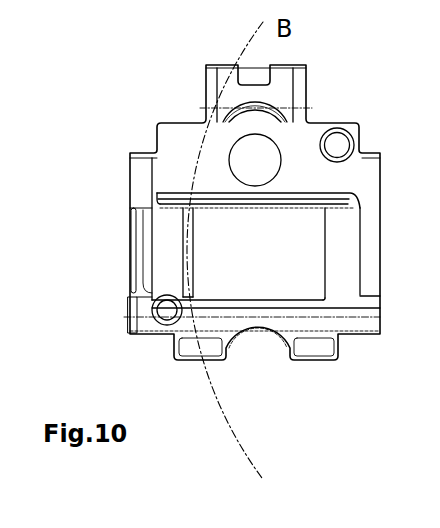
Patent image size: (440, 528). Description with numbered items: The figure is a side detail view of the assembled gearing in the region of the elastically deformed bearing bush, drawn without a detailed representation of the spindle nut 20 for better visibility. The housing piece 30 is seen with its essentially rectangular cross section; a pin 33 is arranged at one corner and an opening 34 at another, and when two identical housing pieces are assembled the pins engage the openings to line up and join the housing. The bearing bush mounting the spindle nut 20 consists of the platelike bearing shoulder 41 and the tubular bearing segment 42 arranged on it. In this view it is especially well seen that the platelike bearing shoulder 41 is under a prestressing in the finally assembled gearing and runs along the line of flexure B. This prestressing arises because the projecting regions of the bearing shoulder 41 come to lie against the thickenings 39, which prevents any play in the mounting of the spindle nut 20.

The spindle nut 20 is at (253, 250).
The housing piece 30 is at (278, 315).
The pin 33 is at (167, 312).
The opening 34 is at (130, 315).
The thickening 39 is at (177, 192).
The platelike bearing shoulder 41 is at (182, 240).
The tubular bearing segment 42 is at (135, 245).